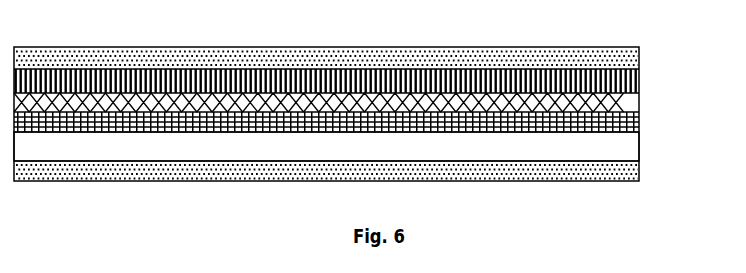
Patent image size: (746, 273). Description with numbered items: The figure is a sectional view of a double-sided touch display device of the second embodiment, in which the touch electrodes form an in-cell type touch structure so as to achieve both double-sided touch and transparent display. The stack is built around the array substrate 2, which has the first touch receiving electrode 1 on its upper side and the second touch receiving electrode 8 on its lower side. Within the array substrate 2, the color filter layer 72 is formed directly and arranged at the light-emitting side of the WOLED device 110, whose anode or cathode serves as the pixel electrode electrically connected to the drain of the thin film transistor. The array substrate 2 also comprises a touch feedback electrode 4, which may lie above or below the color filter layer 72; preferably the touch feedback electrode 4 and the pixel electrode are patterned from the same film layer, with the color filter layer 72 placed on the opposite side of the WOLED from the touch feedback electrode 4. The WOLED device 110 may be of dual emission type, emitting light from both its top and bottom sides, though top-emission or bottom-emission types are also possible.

The first touch receiving electrode 1 is at (640, 47).
The WOLED device 110 is at (640, 77).
The color filter layer 72 is at (640, 98).
The touch feedback electrode 4 is at (640, 121).
The array substrate 2 is at (649, 177).
The second touch receiving electrode 8 is at (640, 176).